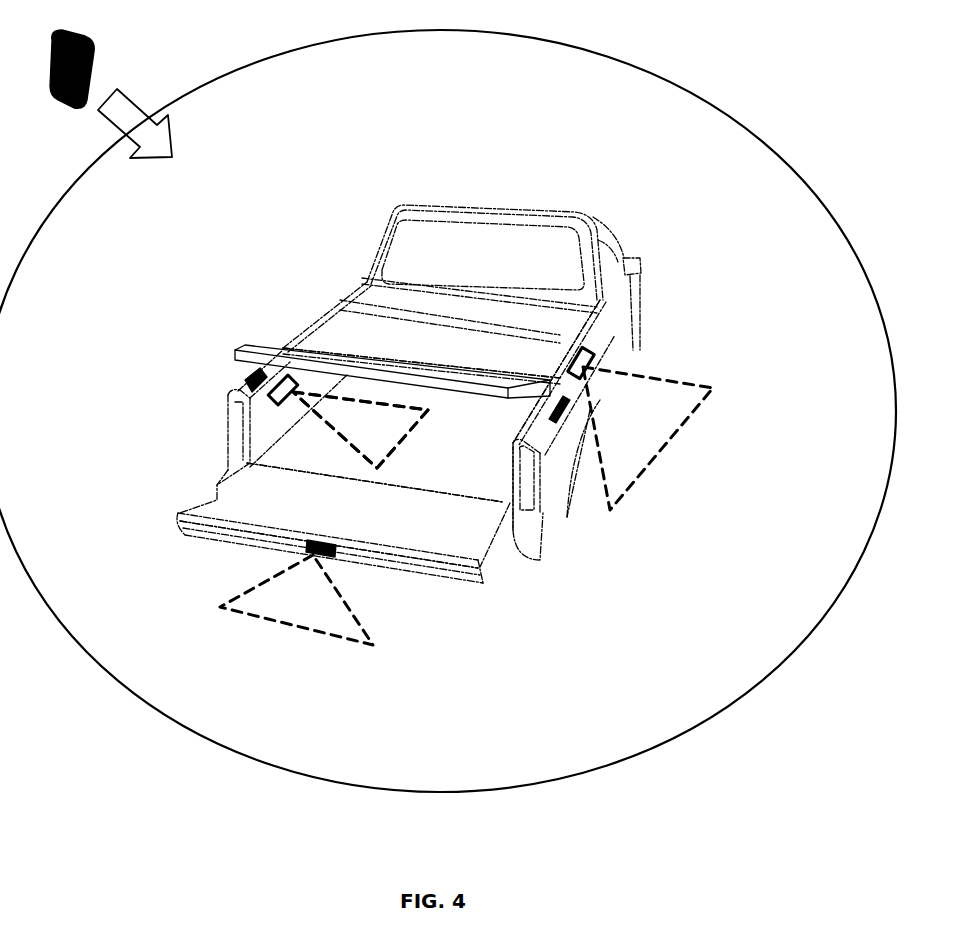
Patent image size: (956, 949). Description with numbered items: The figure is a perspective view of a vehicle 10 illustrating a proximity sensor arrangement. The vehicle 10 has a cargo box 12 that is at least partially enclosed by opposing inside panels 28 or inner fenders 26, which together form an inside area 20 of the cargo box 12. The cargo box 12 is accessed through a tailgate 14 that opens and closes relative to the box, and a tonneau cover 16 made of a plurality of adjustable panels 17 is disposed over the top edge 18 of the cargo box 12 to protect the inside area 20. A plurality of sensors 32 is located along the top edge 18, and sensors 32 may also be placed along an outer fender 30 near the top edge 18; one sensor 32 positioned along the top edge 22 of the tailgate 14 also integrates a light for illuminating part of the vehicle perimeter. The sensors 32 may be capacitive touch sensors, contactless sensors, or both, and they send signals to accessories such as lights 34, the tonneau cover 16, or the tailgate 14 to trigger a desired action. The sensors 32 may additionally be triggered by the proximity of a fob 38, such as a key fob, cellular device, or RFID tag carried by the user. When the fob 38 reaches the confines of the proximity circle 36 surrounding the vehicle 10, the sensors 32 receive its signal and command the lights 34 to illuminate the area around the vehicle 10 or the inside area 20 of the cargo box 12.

The vehicle 10 is at (568, 198).
The cargo box 12 is at (547, 457).
The tailgate 14 is at (217, 505).
The tonneau cover 16 is at (298, 336).
The adjustable panels 17 is at (248, 358).
The top edge of the cargo box 18 is at (593, 339).
The inside area 20 is at (450, 475).
The top edge of the tailgate 22 is at (208, 527).
The inside fenders 26 is at (260, 426).
The inside panels 28 is at (290, 441).
The outer fender 30 is at (510, 478).
The sensors 32 is at (245, 378).
The lights 34 is at (293, 387).
The proximity circle 36 is at (567, 43).
The fob 38 is at (80, 42).